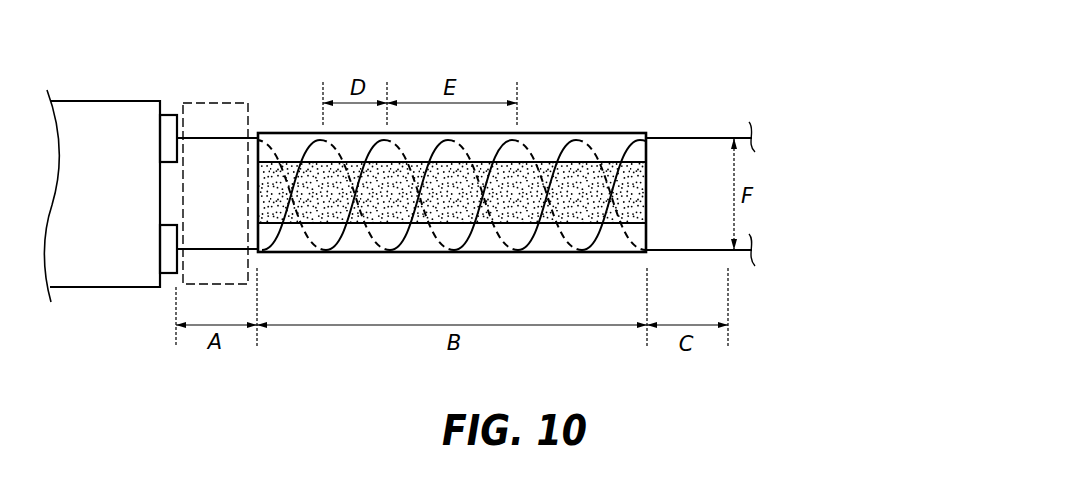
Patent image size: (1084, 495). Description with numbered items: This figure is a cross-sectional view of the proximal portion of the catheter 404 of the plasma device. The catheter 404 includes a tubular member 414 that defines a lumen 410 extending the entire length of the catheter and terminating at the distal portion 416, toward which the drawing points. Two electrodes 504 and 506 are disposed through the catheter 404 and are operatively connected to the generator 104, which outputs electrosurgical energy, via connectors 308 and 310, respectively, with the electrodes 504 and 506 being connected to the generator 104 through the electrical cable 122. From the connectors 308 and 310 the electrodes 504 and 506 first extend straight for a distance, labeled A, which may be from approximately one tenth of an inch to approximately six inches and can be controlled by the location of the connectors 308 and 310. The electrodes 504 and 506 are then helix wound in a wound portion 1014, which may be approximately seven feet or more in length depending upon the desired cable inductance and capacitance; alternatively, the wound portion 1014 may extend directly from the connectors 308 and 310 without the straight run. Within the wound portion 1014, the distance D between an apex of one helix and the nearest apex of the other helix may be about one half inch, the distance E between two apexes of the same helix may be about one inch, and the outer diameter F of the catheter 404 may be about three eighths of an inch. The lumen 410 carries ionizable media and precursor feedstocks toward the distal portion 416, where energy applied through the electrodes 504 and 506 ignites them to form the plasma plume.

The generator 104 is at (103, 100).
The connector 308 is at (164, 114).
The connector 310 is at (168, 275).
The electrical cable 122 is at (213, 102).
The electrode 504 is at (204, 247).
The electrode 506 is at (234, 137).
The tubular member 414 is at (548, 254).
The wound portion 1014 is at (547, 140).
The catheter 404 is at (636, 94).
The lumen 410 is at (659, 198).
The distal portion 416 is at (803, 194).